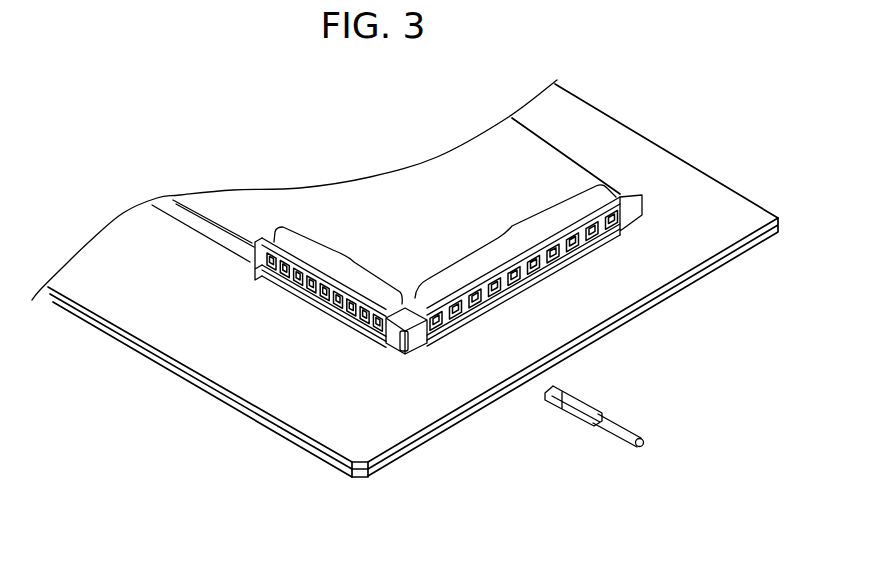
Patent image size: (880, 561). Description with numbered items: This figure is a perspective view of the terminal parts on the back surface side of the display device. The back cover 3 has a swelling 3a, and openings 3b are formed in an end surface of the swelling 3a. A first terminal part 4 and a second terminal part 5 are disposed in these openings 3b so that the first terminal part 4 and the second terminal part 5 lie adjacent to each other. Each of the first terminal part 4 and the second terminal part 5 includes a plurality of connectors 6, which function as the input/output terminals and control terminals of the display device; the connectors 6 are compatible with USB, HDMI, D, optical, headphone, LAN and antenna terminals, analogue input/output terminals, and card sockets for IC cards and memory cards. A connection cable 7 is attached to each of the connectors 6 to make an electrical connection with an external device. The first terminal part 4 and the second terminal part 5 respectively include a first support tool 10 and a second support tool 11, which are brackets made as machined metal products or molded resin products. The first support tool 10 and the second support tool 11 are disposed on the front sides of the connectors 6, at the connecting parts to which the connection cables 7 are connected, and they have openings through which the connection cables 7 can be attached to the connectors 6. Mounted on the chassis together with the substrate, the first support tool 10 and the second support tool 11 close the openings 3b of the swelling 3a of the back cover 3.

The back cover 3 is at (98, 272).
The swelling 3a is at (219, 213).
The openings 3b is at (250, 265).
The first terminal part 4 is at (610, 242).
The second terminal part 5 is at (494, 356).
The connectors 6 is at (503, 225).
The connection cable 7 is at (642, 432).
The first support tool 10 is at (570, 260).
The second support tool 11 is at (362, 337).